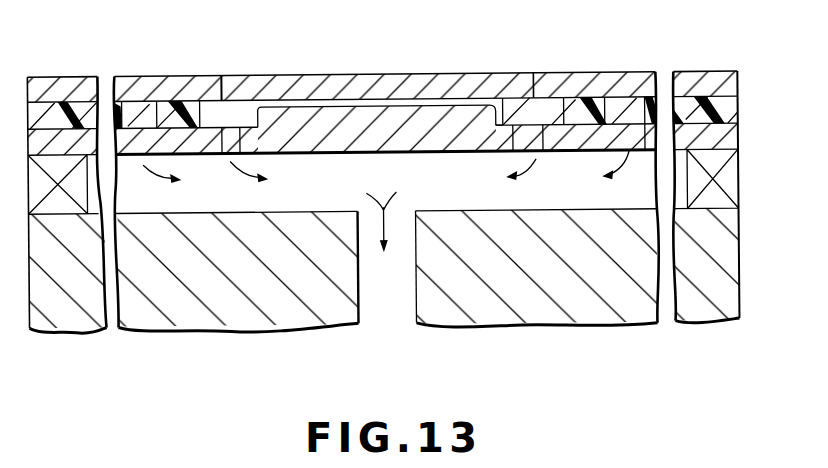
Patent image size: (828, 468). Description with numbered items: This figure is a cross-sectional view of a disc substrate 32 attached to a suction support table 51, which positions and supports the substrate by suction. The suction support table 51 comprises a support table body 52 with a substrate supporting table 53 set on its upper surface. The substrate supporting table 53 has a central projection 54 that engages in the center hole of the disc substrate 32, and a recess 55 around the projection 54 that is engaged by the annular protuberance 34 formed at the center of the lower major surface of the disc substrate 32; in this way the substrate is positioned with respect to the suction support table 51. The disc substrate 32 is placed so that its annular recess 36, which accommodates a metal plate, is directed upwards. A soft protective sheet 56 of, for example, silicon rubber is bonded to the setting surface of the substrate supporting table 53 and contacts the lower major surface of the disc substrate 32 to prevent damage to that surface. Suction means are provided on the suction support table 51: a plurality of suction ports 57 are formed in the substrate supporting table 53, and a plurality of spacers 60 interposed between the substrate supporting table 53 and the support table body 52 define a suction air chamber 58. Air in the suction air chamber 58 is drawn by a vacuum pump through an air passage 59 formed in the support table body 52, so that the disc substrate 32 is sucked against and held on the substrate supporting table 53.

The disc substrate 32 is at (35, 75).
The annular protuberance 34 is at (501, 130).
The annular recess 36 is at (532, 92).
The suction support table 51 is at (734, 172).
The support table body 52 is at (732, 249).
The substrate supporting table 53 is at (733, 136).
The central projection 54 is at (434, 110).
The recess 55 is at (562, 106).
The protective sheet 56 is at (716, 97).
The suction ports 57 is at (133, 110).
The suction air chamber 58 is at (152, 108).
The air passage 59 is at (416, 274).
The spacers 60 is at (735, 179).